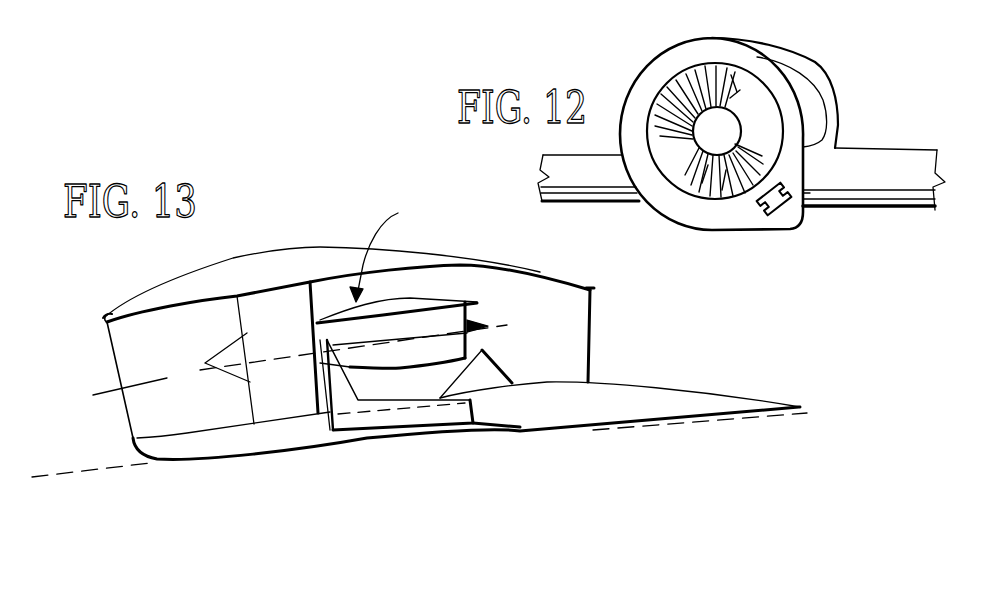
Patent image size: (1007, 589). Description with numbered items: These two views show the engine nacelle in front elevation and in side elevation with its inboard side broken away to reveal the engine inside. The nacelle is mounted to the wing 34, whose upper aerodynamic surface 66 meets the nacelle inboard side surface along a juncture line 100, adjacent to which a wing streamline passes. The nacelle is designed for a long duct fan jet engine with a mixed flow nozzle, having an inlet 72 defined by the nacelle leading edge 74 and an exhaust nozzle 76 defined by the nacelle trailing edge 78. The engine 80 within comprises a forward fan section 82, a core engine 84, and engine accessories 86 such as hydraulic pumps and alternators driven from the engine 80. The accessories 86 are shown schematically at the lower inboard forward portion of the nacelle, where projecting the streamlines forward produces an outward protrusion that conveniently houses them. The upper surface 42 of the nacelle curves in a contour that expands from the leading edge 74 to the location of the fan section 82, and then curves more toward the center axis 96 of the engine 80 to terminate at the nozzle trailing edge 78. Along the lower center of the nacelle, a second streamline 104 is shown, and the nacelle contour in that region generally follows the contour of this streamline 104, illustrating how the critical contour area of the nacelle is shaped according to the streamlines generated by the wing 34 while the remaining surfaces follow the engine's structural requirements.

In FIG. 13, the wing 34 is at (685, 402).
In FIG. 13, the upper surface 42 is at (233, 257).
In FIG. 13, the upper aerodynamic surface 66 is at (638, 382).
In FIG. 13, the inlet 72 is at (132, 355).
In FIG. 13, the leading edge 74 is at (103, 318).
In FIG. 13, the exhaust nozzle 76 is at (573, 332).
In FIG. 13, the trailing edge 78 is at (597, 290).
In FIG. 13, the engine 80 is at (389, 252).
In FIG. 13, the fan section 82 is at (286, 304).
In FIG. 13, the core engine 84 is at (420, 323).
In FIG. 12, the engine accessories 86 is at (783, 175).
In FIG. 13, the center axis 96 is at (172, 376).
In FIG. 12, the line 100 is at (803, 143).
In FIG. 12, the streamline 104 is at (803, 193).
In FIG. 13, the streamline 104 is at (110, 468).